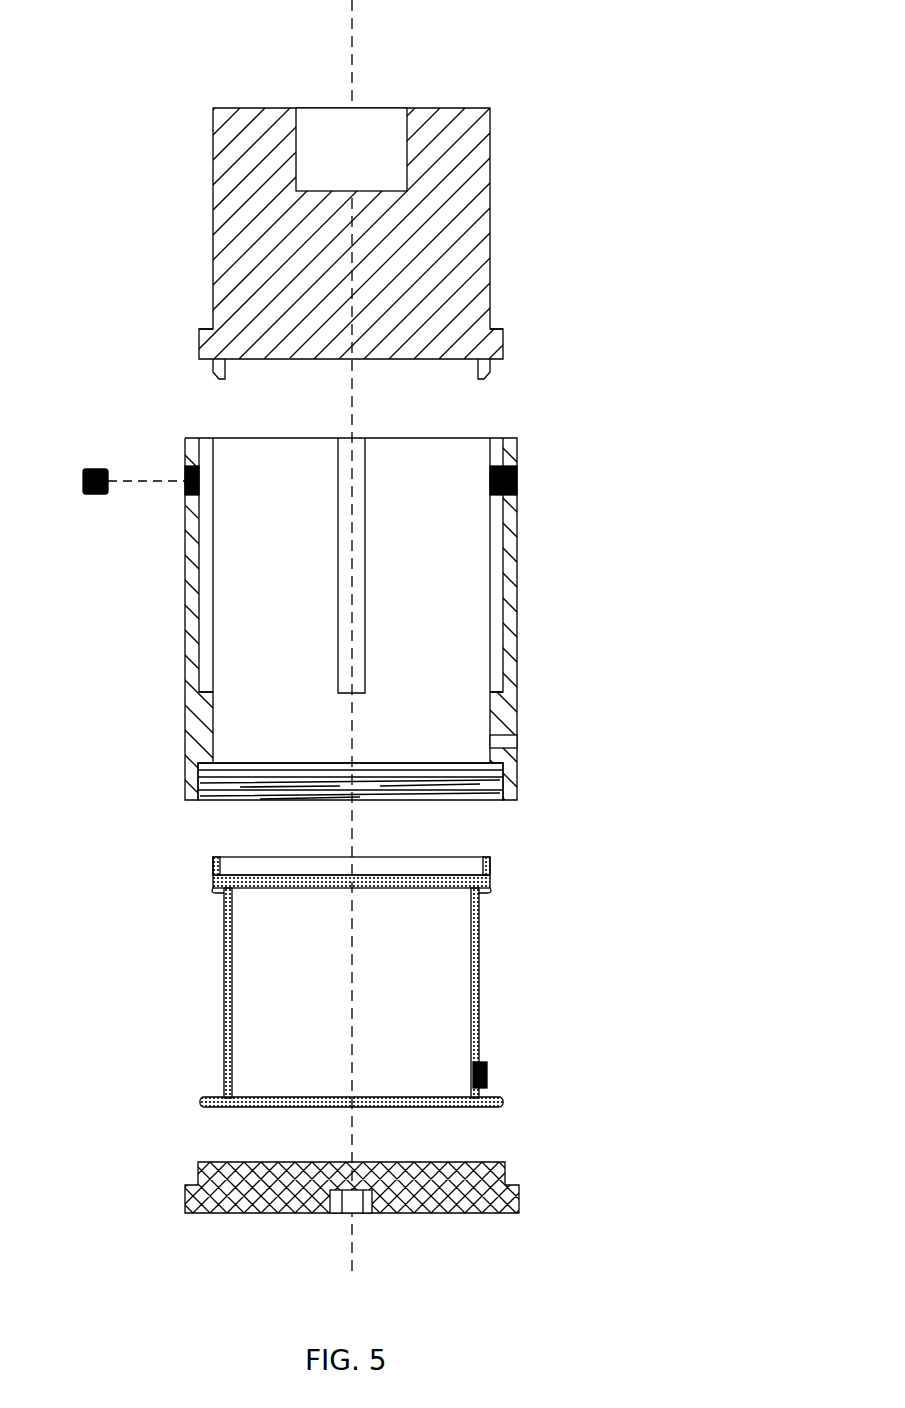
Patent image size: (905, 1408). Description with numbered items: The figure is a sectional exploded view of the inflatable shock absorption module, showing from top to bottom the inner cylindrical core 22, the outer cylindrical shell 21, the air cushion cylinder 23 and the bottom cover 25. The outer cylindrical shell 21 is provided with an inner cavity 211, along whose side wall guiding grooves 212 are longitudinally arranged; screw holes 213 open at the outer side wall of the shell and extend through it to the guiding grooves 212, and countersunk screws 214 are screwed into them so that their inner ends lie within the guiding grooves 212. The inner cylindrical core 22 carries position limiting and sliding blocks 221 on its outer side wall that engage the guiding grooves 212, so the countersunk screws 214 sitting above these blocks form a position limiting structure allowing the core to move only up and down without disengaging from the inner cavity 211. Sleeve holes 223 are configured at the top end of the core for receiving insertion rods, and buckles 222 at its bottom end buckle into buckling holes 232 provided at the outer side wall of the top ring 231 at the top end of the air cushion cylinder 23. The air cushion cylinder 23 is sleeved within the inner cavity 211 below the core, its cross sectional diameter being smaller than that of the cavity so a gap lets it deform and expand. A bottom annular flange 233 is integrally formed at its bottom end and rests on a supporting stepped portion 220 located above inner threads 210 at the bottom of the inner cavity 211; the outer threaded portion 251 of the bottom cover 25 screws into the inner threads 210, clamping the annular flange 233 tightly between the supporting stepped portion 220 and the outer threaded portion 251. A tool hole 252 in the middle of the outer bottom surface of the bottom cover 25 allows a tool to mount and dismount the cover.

The outer cylindrical shell 21 is at (540, 642).
The inner threads 210 is at (257, 788).
The inner cavity 211 is at (440, 570).
The guiding grooves 212 is at (350, 475).
The screw holes 213 is at (185, 470).
The countersunk screws 214 is at (518, 480).
The inner cylindrical core 22 is at (535, 210).
The supporting stepped portion 220 is at (195, 770).
The position limiting and sliding blocks 221 is at (200, 335).
The buckles 222 is at (215, 377).
The sleeve holes 223 is at (335, 128).
The air cushion cylinder 23 is at (510, 995).
The top ring 231 is at (445, 862).
The buckling holes 232 is at (215, 872).
The bottom annular flange 233 is at (205, 1095).
The bottom cover 25 is at (485, 1230).
The outer threaded portion 251 is at (505, 1170).
The tool hole 252 is at (348, 1205).